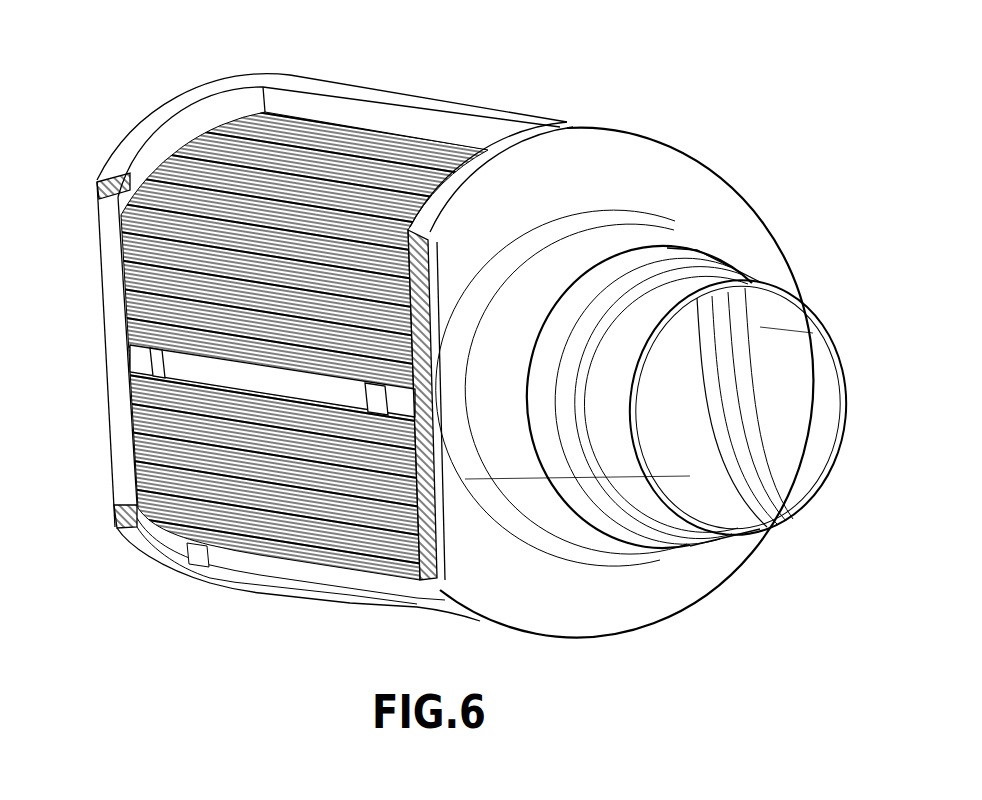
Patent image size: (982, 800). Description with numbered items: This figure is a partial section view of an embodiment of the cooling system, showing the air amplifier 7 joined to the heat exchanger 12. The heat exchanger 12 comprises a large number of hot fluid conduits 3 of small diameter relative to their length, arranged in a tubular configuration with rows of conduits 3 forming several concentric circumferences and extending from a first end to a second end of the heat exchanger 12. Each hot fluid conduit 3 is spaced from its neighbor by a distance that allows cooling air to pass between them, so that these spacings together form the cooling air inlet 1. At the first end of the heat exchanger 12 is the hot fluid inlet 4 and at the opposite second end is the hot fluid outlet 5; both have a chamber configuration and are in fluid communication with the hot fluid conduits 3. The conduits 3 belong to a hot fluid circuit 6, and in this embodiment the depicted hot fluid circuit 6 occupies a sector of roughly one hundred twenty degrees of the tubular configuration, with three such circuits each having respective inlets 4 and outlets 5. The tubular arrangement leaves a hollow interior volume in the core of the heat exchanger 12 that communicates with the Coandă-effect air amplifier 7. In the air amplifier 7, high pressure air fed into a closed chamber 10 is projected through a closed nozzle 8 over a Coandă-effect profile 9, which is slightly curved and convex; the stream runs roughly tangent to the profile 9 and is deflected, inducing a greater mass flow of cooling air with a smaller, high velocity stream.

The cooling air inlet 1 is at (443, 152).
The hot fluid conduits 3 is at (355, 150).
The hot fluid inlet 4 is at (122, 437).
The hot fluid outlet 5 is at (430, 580).
The hot fluid circuit 6 is at (67, 157).
The air amplifier 7 is at (593, 533).
The nozzle 8 is at (737, 462).
The Coandă-effect profile 9 is at (760, 353).
The chamber 10 is at (667, 265).
The heat exchanger 12 is at (190, 103).